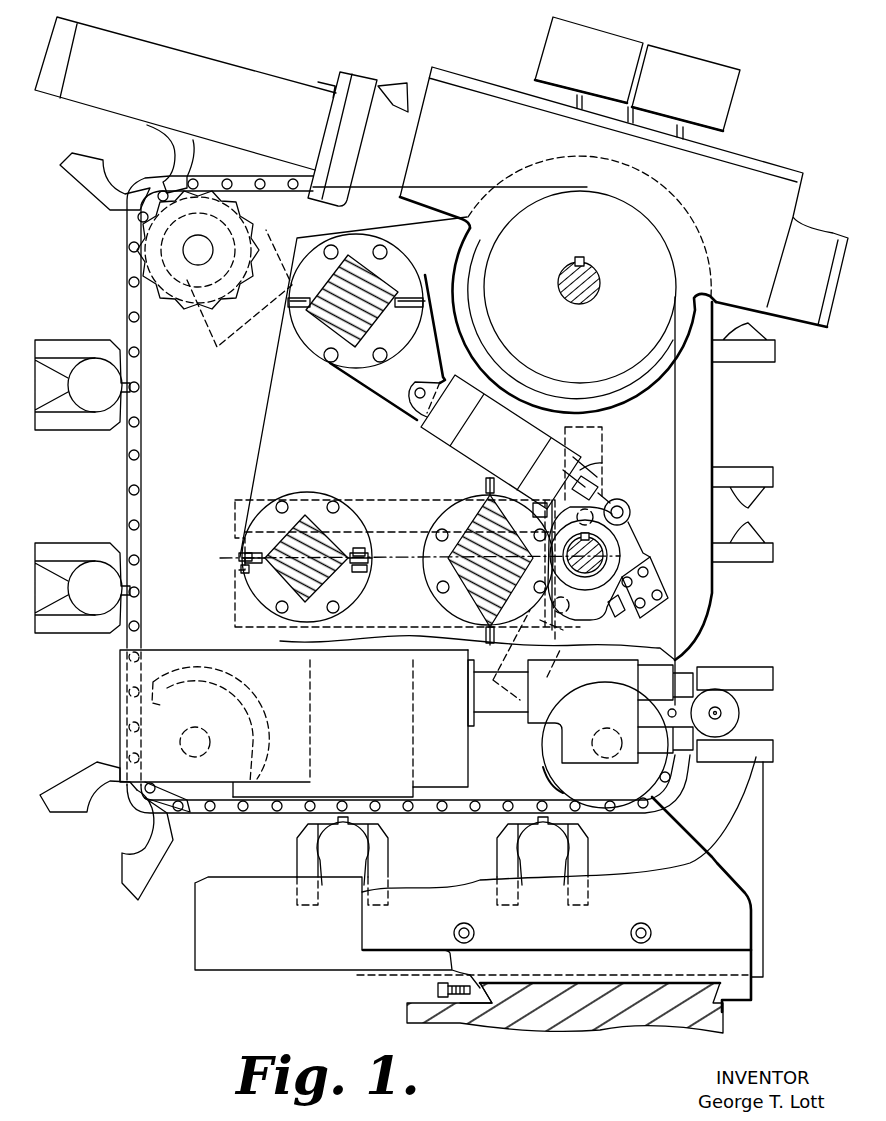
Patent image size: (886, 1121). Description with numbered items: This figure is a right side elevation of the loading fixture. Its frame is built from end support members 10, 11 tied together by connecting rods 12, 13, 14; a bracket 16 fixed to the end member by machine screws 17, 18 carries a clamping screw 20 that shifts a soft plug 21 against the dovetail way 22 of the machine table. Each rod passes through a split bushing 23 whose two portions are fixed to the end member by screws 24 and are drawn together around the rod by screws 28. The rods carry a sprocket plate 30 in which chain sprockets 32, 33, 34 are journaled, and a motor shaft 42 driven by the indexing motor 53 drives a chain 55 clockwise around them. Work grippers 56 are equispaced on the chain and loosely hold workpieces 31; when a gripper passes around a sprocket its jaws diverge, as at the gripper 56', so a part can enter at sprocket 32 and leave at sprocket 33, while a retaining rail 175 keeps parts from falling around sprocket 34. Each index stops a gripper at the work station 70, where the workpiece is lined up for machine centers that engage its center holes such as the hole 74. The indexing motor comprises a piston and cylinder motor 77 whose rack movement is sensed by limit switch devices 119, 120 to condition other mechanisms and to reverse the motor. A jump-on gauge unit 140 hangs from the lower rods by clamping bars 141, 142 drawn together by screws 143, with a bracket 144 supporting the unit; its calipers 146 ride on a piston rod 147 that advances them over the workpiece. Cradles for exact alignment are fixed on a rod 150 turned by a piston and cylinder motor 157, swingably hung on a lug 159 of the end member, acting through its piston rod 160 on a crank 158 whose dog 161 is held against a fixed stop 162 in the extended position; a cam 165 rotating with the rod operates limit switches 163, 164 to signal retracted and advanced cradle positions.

The end support member 10 is at (685, 822).
The end support member 11 is at (268, 406).
The connecting rod 12 is at (488, 533).
The connecting rod 13 is at (333, 542).
The connecting rod 14 is at (378, 278).
The bracket 16 is at (599, 972).
The machine screw 17 is at (474, 933).
The machine screw 18 is at (651, 933).
The clamping screw 20 is at (437, 992).
The soft plug 21 is at (487, 1012).
The dovetail way 22 is at (495, 983).
The split bushing 23 is at (260, 600).
The screw 24 is at (283, 501).
The screw 28 is at (372, 553).
The sprocket plate 30 is at (194, 444).
The workpiece 31 is at (740, 708).
The chain sprocket 32 is at (270, 233).
The chain sprocket 33 is at (237, 682).
The chain sprocket 34 is at (560, 788).
The motor shaft 42 is at (600, 297).
The motor 53 is at (624, 167).
The chain 55 is at (128, 462).
The work gripper 56 is at (82, 472).
The gripper 56' is at (106, 816).
The work station position 70 is at (775, 676).
The center hole 74 is at (723, 714).
The piston and cylinder motor 77 is at (180, 53).
The limit switch device 119 is at (597, 70).
The limit switch device 120 is at (703, 97).
The gauge unit 140 is at (235, 650).
The bar 141 is at (404, 498).
The bar 142 is at (234, 583).
The screw 143 is at (236, 540).
The bracket 144 is at (298, 777).
The calipers 146 is at (720, 670).
The piston rod 147 is at (503, 713).
The rod 150 is at (600, 555).
The piston and cylinder motor 157 is at (513, 441).
The crank member 158 is at (628, 528).
The lug 159 is at (357, 387).
The piston rod 160 is at (602, 465).
The dog 161 is at (596, 618).
The fixed stop 162 is at (630, 620).
The limit switch 163 is at (603, 432).
The limit switch 164 is at (548, 668).
The cam 165 is at (620, 553).
The retaining rail 175 is at (670, 866).